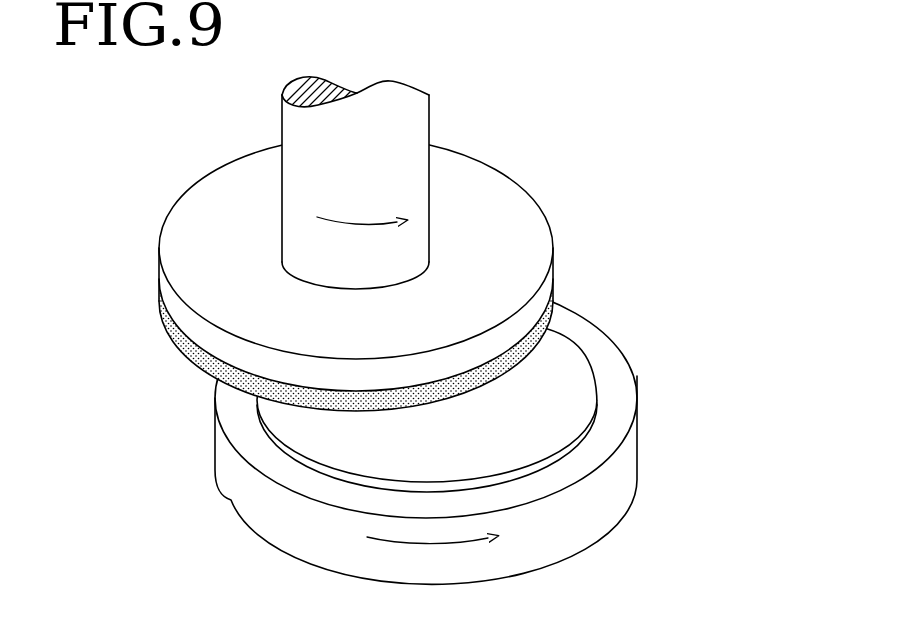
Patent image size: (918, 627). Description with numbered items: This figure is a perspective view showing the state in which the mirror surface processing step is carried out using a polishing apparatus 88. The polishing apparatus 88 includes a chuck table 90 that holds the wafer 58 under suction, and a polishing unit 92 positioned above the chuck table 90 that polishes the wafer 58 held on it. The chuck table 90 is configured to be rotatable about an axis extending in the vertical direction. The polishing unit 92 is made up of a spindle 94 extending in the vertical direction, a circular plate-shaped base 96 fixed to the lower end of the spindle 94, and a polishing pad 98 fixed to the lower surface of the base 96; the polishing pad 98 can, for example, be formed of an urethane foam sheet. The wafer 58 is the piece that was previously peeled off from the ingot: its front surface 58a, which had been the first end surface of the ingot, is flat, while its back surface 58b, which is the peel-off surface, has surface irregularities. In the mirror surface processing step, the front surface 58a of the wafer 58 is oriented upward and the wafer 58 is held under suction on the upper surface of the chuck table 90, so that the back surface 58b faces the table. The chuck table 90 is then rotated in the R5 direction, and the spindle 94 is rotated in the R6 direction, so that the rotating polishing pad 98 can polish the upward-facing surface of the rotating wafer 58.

The polishing apparatus 88 is at (423, 360).
The chuck table 90 is at (416, 431).
The polishing unit 92 is at (399, 274).
The spindle 94 is at (379, 180).
The base 96 is at (503, 219).
The polishing pad 98 is at (186, 349).
The wafer 58 is at (373, 442).
The front surface 58a is at (300, 428).
The back surface 58b is at (292, 449).
The R5 direction R5 is at (410, 548).
The R6 direction R6 is at (344, 222).